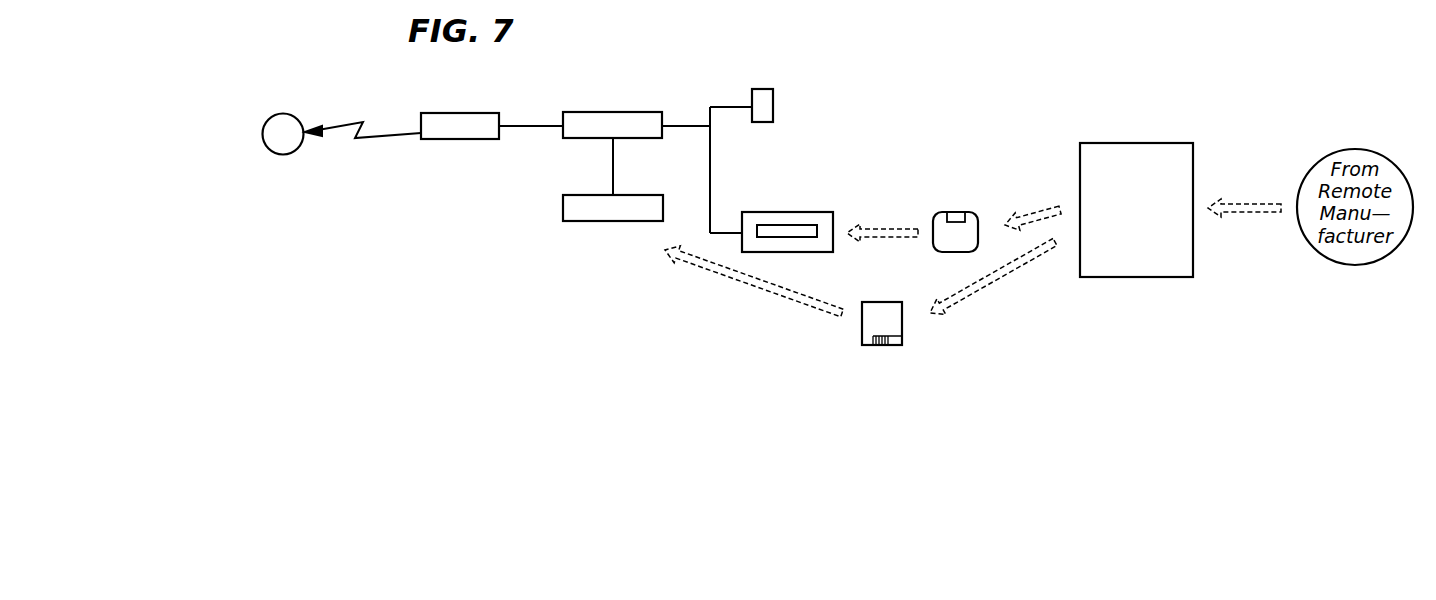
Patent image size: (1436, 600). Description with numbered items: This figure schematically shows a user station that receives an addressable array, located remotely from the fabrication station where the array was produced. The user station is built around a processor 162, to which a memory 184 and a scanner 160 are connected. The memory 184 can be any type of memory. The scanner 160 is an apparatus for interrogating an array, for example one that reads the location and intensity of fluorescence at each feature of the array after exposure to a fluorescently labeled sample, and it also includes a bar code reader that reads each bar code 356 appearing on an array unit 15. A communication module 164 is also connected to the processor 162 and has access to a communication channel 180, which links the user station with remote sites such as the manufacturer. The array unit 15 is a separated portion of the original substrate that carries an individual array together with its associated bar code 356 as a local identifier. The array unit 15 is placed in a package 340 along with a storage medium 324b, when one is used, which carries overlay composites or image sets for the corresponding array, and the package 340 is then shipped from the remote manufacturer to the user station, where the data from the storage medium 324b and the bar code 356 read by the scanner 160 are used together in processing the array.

The communication channel 180 is at (290, 114).
The communication module 164 is at (470, 139).
The processor 162 is at (603, 112).
The scanner 160 is at (607, 221).
The memory 184 is at (773, 107).
The storage medium 324b is at (956, 212).
The package 340 is at (1154, 216).
The array unit 15 is at (862, 336).
The bar code 356 is at (902, 340).